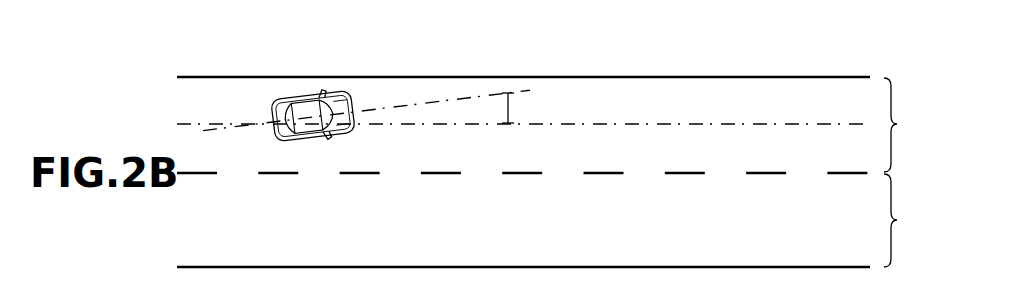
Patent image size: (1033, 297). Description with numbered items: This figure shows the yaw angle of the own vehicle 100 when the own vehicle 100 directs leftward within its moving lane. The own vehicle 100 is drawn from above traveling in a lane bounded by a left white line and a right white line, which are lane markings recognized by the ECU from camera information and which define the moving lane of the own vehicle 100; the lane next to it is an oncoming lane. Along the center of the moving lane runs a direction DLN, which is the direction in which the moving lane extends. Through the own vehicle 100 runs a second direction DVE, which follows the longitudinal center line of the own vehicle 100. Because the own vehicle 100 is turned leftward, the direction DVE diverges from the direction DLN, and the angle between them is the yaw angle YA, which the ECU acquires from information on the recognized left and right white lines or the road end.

The own vehicle 100 is at (312, 95).
The direction along longitudinal center line of the own vehicle DVE is at (436, 102).
The direction in which the moving lane extends DLN is at (641, 122).
The yaw angle YA is at (519, 108).